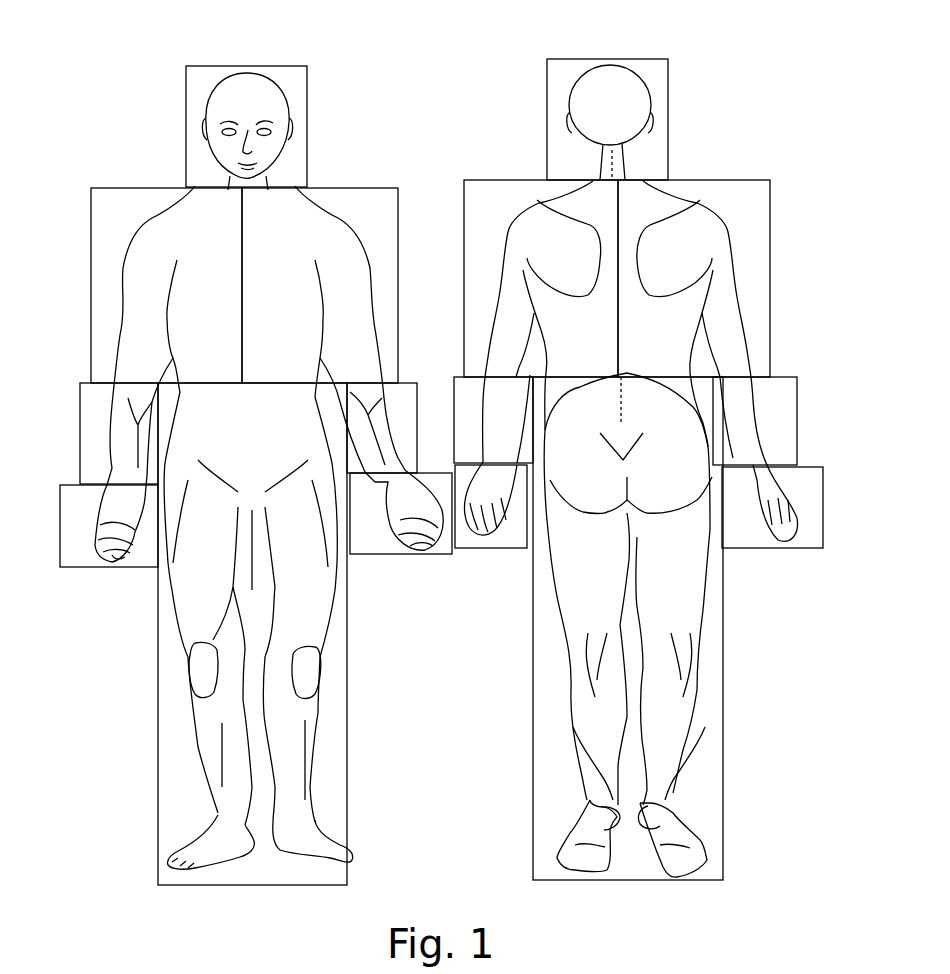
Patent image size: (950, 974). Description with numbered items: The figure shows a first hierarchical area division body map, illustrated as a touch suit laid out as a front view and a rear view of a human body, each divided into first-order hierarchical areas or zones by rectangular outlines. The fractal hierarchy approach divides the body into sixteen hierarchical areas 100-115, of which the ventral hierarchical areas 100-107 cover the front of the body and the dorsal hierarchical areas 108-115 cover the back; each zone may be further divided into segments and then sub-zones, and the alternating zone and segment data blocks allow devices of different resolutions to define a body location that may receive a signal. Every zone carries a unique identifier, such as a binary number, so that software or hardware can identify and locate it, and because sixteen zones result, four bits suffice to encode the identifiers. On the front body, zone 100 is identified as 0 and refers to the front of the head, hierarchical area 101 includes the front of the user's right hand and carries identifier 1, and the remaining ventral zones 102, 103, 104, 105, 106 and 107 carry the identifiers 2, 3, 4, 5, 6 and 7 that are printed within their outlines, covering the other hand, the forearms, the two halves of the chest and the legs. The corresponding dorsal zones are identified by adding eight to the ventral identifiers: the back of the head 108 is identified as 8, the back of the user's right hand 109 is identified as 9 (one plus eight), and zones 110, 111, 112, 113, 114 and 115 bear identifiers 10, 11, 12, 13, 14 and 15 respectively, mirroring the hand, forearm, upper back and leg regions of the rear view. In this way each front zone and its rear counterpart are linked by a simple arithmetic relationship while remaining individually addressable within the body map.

The hierarchical area 100 is at (220, 101).
The hierarchical area 101 is at (81, 504).
The hierarchical area 102 is at (401, 550).
The hierarchical area 103 is at (100, 423).
The hierarchical area 104 is at (384, 386).
The hierarchical area 105 is at (156, 308).
The hierarchical area 106 is at (324, 300).
The hierarchical area 107 is at (211, 634).
The hierarchical area 108 is at (633, 91).
The hierarchical area 109 is at (799, 486).
The hierarchical area 110 is at (489, 567).
The hierarchical area 111 is at (781, 401).
The hierarchical area 112 is at (473, 402).
The hierarchical area 113 is at (699, 292).
The hierarchical area 114 is at (533, 293).
The hierarchical area 115 is at (673, 626).
The zone identifier 0 is at (246, 128).
The zone identifier 1 is at (109, 526).
The zone identifier 2 is at (401, 512).
The zone identifier 3 is at (126, 428).
The zone identifier 4 is at (368, 420).
The zone identifier 5 is at (166, 335).
The zone identifier 6 is at (323, 328).
The zone identifier 7 is at (255, 634).
The zone identifier 8 is at (607, 119).
The zone identifier 9 is at (772, 506).
The zone identifier 10 is at (491, 505).
The zone identifier 11 is at (755, 421).
The zone identifier 12 is at (493, 419).
The zone identifier 13 is at (694, 322).
The zone identifier 14 is at (541, 321).
The zone identifier 15 is at (628, 626).